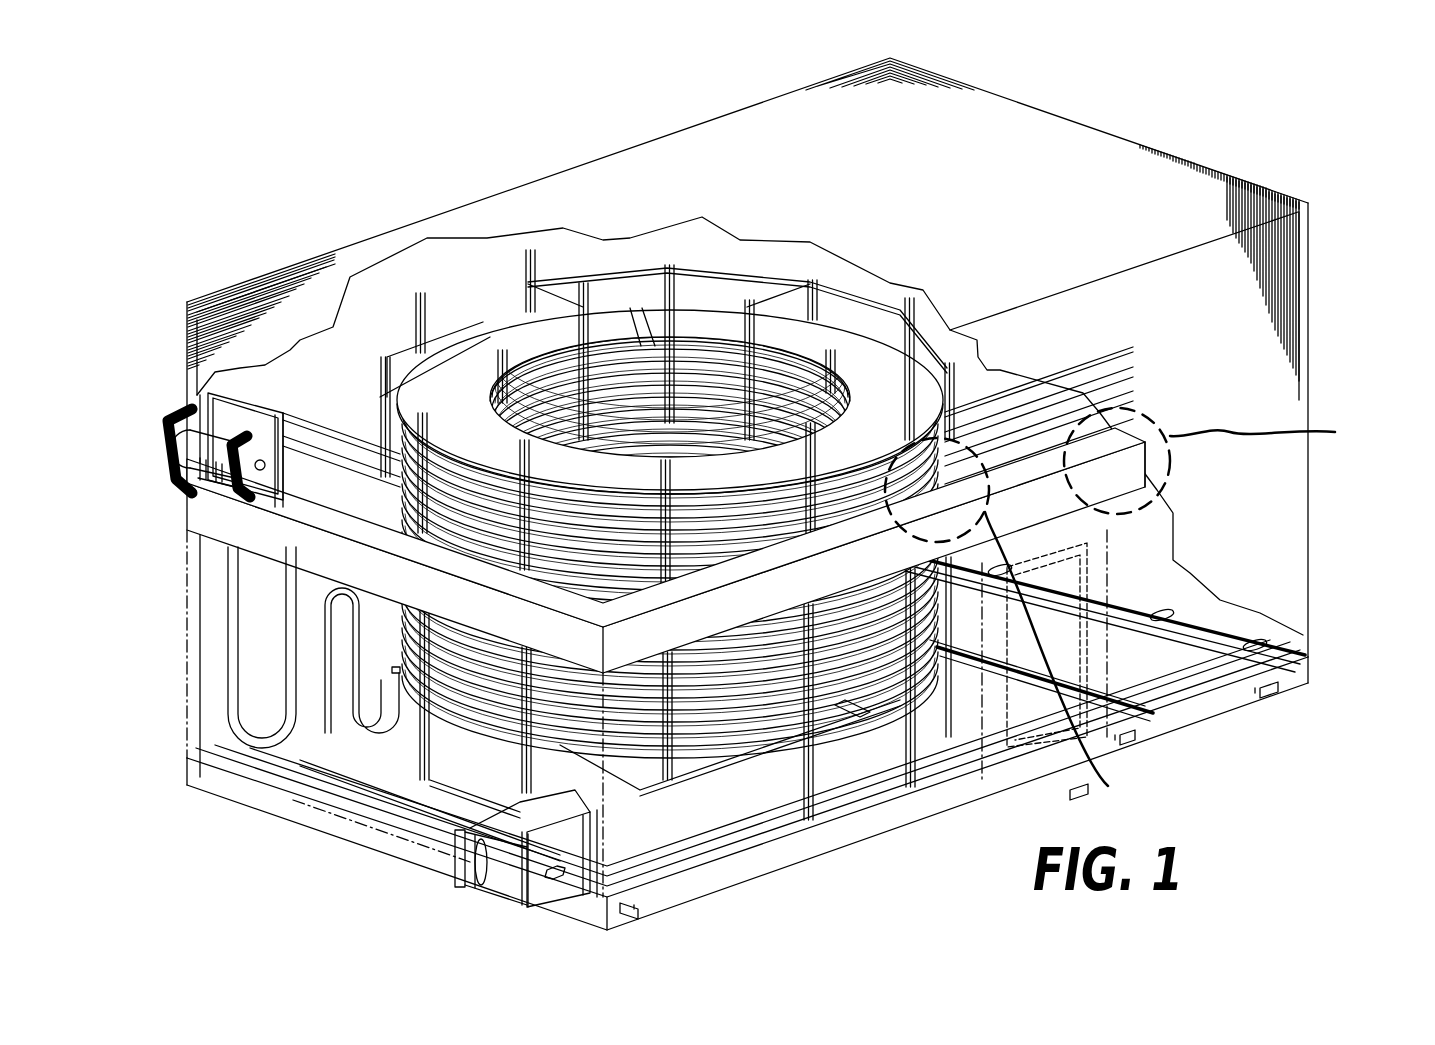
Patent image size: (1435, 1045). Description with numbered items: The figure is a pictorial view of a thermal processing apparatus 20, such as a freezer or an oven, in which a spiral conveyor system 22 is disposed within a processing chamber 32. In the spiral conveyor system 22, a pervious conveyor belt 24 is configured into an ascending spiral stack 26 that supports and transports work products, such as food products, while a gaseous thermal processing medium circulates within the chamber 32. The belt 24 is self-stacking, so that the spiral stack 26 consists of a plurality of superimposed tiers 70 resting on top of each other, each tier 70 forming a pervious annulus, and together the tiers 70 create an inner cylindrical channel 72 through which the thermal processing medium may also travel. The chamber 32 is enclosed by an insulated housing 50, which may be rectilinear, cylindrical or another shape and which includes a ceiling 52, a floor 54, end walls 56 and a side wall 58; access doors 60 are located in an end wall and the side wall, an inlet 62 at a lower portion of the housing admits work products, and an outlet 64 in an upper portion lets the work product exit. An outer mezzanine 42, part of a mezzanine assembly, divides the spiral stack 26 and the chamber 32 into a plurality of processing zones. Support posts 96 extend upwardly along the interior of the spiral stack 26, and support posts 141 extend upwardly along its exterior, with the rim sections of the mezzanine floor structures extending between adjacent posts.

The thermal processing apparatus 20 is at (1352, 98).
The spiral conveyor system 22 is at (498, 303).
The conveyor belt 24 is at (650, 805).
The spiral stack 26 is at (940, 605).
The processing chamber 32 is at (975, 76).
The outer mezzanine 42 is at (1137, 470).
The insulated housing 50 is at (1172, 153).
The ceiling 52 is at (800, 134).
The floor 54 is at (1208, 667).
The end walls 56 is at (229, 350).
The side wall 58 is at (1253, 370).
The access doors 60 is at (1100, 665).
The inlet 62 is at (492, 892).
The outlet 64 is at (166, 410).
The tiers 70 is at (840, 710).
The inner cylindrical channel 72 is at (662, 378).
The support posts 96 is at (648, 326).
The support posts 141 is at (798, 298).